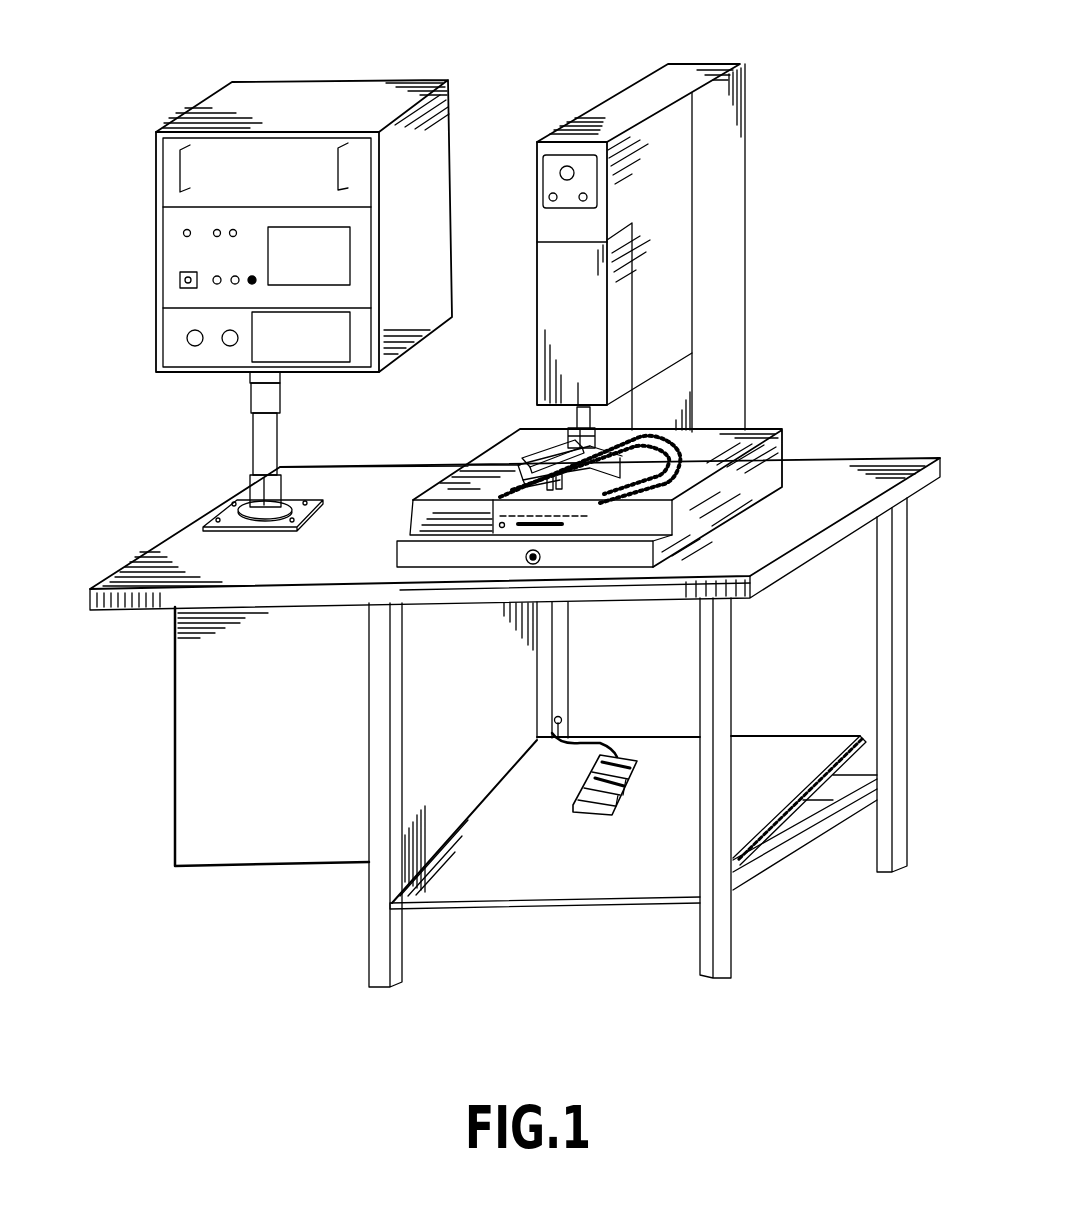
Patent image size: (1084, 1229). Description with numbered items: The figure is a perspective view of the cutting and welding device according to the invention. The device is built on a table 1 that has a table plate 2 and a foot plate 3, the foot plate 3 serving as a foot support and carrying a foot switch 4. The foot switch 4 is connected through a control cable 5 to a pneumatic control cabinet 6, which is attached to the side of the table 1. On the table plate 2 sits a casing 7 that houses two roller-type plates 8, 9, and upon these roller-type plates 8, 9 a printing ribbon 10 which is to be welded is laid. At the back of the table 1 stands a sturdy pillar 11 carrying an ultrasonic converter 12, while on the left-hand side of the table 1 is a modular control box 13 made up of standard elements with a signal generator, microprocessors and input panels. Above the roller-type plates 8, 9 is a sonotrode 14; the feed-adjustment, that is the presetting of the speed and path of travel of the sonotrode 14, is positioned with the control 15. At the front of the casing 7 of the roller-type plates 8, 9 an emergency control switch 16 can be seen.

The table 1 is at (908, 623).
The table plate 2 is at (812, 487).
The foot plate 3 is at (772, 760).
The foot switch 4 is at (613, 790).
The control cable 5 is at (600, 740).
The pneumatic control cabinet 6 is at (202, 743).
The casing 7 is at (770, 428).
The roller-type plate 8 is at (563, 453).
The roller-type plate 9 is at (592, 494).
The printing ribbon 10 is at (690, 430).
The pillar 11 is at (713, 158).
The ultrasonic converter 12 is at (620, 108).
The modular control box 13 is at (177, 257).
The sonotrode 14 is at (565, 432).
The control 15 is at (550, 165).
The emergency control switch 16 is at (533, 564).